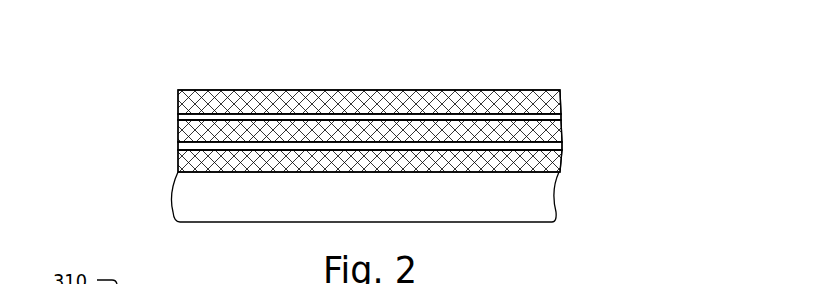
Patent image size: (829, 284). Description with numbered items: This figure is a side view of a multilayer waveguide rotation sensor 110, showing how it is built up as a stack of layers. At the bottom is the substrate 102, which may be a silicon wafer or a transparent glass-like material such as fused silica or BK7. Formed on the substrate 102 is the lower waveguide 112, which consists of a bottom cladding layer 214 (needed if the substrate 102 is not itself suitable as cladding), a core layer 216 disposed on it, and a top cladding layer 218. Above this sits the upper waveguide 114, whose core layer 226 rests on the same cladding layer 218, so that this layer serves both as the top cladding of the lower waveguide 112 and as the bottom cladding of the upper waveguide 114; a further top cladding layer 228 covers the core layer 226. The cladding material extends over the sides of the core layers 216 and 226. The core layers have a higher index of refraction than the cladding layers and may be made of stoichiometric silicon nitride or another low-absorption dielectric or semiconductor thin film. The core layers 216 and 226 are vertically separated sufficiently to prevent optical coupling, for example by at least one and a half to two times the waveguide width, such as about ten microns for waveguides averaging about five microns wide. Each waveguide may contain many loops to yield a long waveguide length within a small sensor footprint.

The multilayer waveguide rotation sensor 110 is at (187, 42).
The lower waveguide 112 is at (156, 141).
The upper waveguide 114 is at (599, 100).
The substrate 102 is at (172, 198).
The top cladding layer 228 is at (213, 90).
The core layer 226 is at (178, 116).
The top cladding layer 218 is at (561, 132).
The core layer 216 is at (562, 145).
The bottom cladding layer 214 is at (561, 160).